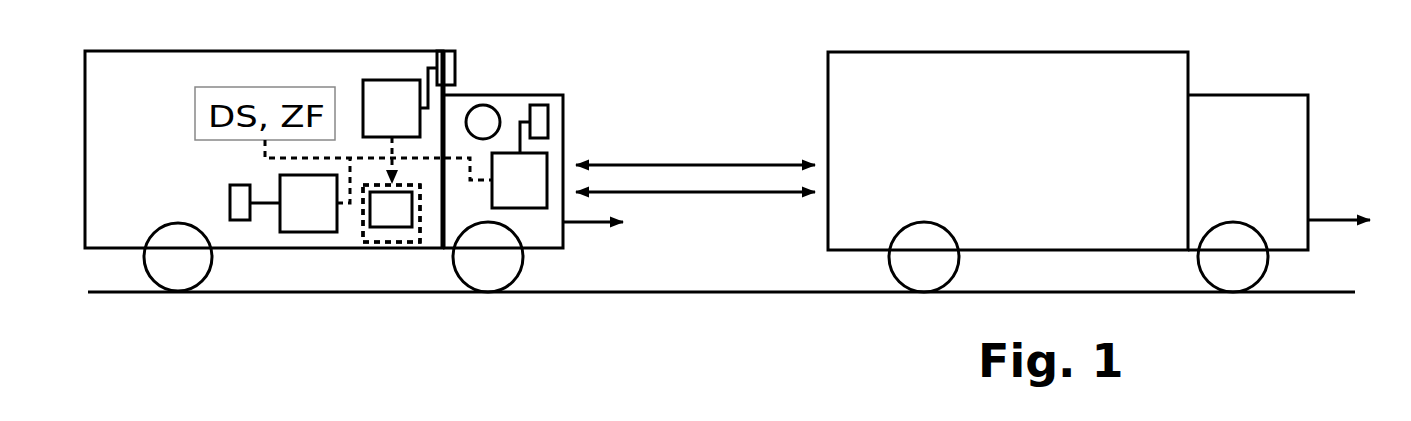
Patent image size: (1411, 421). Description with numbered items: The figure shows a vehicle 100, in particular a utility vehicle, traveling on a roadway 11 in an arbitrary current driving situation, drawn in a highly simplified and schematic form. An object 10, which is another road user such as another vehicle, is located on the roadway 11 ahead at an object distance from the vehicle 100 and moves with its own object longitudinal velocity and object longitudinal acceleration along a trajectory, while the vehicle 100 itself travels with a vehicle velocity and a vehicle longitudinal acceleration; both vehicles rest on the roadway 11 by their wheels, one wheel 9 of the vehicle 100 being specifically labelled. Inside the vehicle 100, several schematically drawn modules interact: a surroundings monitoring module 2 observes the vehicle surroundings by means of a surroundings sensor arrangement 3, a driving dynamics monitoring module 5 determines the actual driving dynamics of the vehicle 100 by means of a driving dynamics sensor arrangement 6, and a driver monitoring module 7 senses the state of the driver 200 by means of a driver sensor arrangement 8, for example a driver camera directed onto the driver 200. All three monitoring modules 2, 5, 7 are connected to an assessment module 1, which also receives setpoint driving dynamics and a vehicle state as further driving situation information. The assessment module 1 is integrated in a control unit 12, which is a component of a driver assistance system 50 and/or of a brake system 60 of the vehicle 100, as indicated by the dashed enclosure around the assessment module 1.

The vehicle 100 is at (163, 107).
The assessment module 1 is at (401, 226).
The surroundings monitoring module 2 is at (401, 124).
The surroundings sensor arrangement 3 is at (455, 65).
The driving dynamics monitoring module 5 is at (317, 219).
The driving dynamics sensor arrangement 6 is at (231, 192).
The driver monitoring module 7 is at (528, 197).
The driver sensor arrangement 8 is at (548, 122).
The wheel 9 is at (200, 282).
The object 10 is at (1028, 168).
The roadway 11 is at (360, 300).
The control unit 12 is at (390, 248).
The driver assistance system 50 is at (391, 213).
The brake system 60 is at (391, 213).
The driver 200 is at (497, 110).